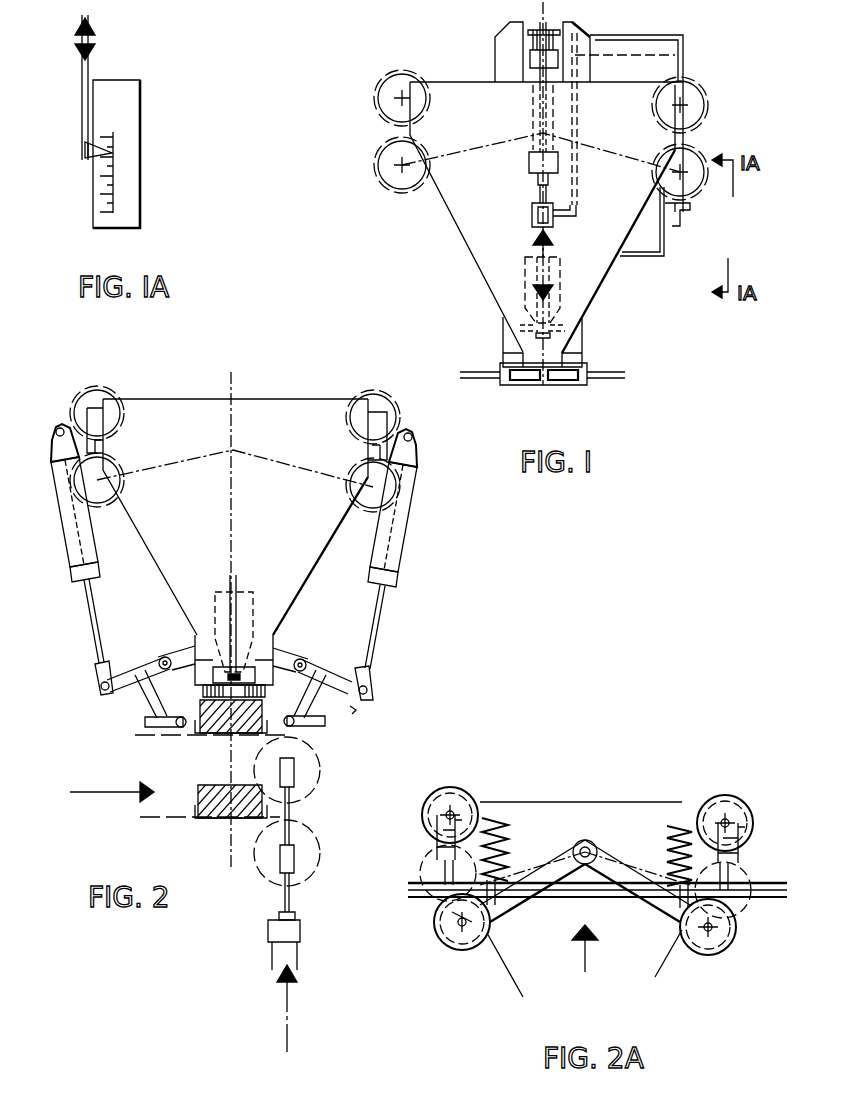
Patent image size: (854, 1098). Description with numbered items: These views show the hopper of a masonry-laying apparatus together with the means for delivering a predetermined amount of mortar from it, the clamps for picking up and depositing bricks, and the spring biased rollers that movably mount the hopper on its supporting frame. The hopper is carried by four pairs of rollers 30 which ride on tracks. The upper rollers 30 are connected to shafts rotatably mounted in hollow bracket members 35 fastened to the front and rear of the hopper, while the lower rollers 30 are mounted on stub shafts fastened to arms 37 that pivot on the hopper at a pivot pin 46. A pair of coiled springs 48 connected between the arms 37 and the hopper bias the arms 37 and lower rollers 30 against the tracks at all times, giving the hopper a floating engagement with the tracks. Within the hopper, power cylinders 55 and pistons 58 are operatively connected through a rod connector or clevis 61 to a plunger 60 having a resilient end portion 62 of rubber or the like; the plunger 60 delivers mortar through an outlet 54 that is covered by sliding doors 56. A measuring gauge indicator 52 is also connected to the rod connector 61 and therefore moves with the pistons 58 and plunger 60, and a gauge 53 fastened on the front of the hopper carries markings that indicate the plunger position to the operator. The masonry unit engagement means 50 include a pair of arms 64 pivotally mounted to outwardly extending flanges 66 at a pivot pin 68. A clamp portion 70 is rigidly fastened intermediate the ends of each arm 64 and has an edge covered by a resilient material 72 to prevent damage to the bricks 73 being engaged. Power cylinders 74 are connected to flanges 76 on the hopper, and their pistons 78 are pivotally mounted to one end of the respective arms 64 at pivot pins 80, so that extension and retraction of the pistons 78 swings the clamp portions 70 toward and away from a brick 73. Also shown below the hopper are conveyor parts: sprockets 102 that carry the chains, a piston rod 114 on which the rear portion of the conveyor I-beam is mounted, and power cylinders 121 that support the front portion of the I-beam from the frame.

In FIG. 1, the rollers 30 is at (378, 95).
In FIG. 2, the rollers 30 is at (74, 395).
In FIG. 2A, the rollers 30 is at (436, 792).
In FIG. 2, the hollow bracket members 35 is at (104, 450).
In FIG. 2A, the hollow bracket members 35 is at (436, 848).
In FIG. 2A, the arms 37 is at (503, 907).
In FIG. 2A, the pivot pin 46 is at (588, 848).
In FIG. 2A, the coiled springs 48 is at (508, 836).
In FIG. 2, the masonry unit engagement means 50 is at (352, 714).
In FIG. 1A, the measuring gauge indicator 52 is at (85, 150).
In FIG. 1, the measuring gauge indicator 52 is at (692, 222).
In FIG. 1A, the gauge 53 is at (140, 158).
In FIG. 1, the gauge 53 is at (665, 254).
In FIG. 1, the outlet 54 is at (560, 362).
In FIG. 1, the power cylinders 55 is at (532, 115).
In FIG. 1, the sliding doors 56 is at (535, 373).
In FIG. 1, the pistons 58 is at (538, 192).
In FIG. 1, the plunger 60 is at (565, 276).
In FIG. 2, the plunger 60 is at (248, 604).
In FIG. 1, the rod connector or clevis 61 is at (532, 212).
In FIG. 1, the resilient end portion 62 is at (568, 330).
In FIG. 2, the resilient end portion 62 is at (215, 640).
In FIG. 2, the arms 64 is at (133, 672).
In FIG. 2, the outwardly extending flanges 66 is at (185, 640).
In FIG. 2, the pivot pin 68 is at (166, 670).
In FIG. 2, the clamp portion 70 is at (140, 708).
In FIG. 2, the resilient material 72 is at (178, 728).
In FIG. 2, the bricks 73 is at (238, 735).
In FIG. 2, the power cylinders 74 is at (70, 520).
In FIG. 2, the flanges 76 is at (56, 426).
In FIG. 2, the pistons 78 is at (92, 620).
In FIG. 2, the pivot pins 80 is at (97, 684).
In FIG. 2, the sprockets 102 is at (303, 835).
In FIG. 2, the piston rod 114 is at (292, 893).
In FIG. 2, the power cylinders 121 is at (280, 958).